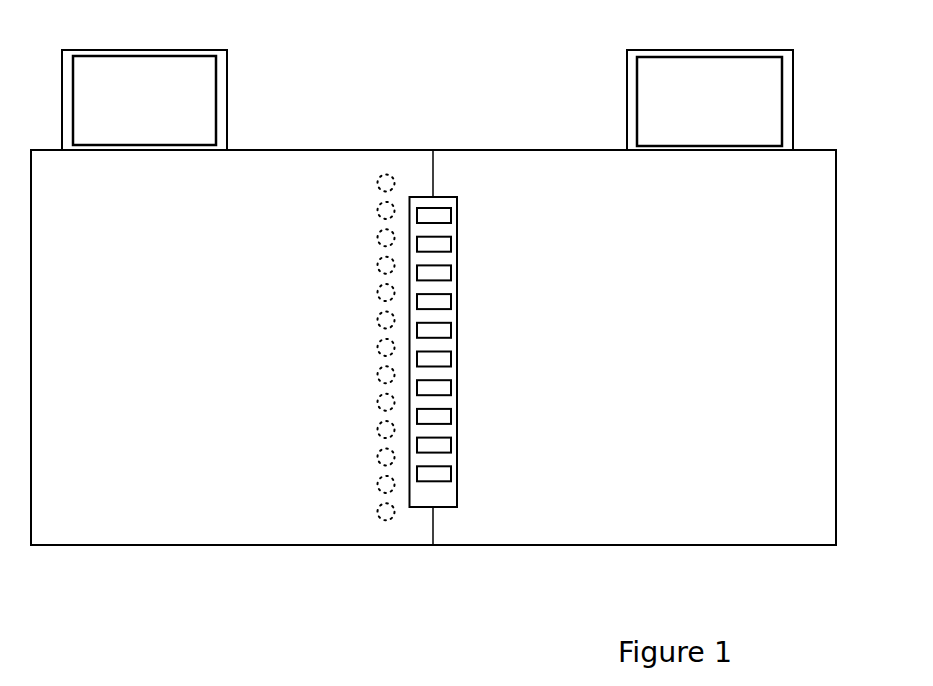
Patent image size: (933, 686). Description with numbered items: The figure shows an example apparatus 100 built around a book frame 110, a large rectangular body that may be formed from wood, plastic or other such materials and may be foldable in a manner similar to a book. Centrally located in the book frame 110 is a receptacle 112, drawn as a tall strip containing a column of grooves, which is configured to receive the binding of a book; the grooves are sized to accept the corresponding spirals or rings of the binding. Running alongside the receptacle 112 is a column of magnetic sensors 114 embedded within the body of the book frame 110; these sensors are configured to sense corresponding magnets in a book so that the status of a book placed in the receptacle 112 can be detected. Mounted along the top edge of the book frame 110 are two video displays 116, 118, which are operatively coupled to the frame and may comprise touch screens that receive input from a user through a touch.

The apparatus 100 is at (532, 80).
The book frame 110 is at (138, 513).
The receptacle 112 is at (443, 501).
The magnetic sensors 114 is at (362, 504).
The video display 116 is at (785, 98).
The video display 118 is at (225, 102).